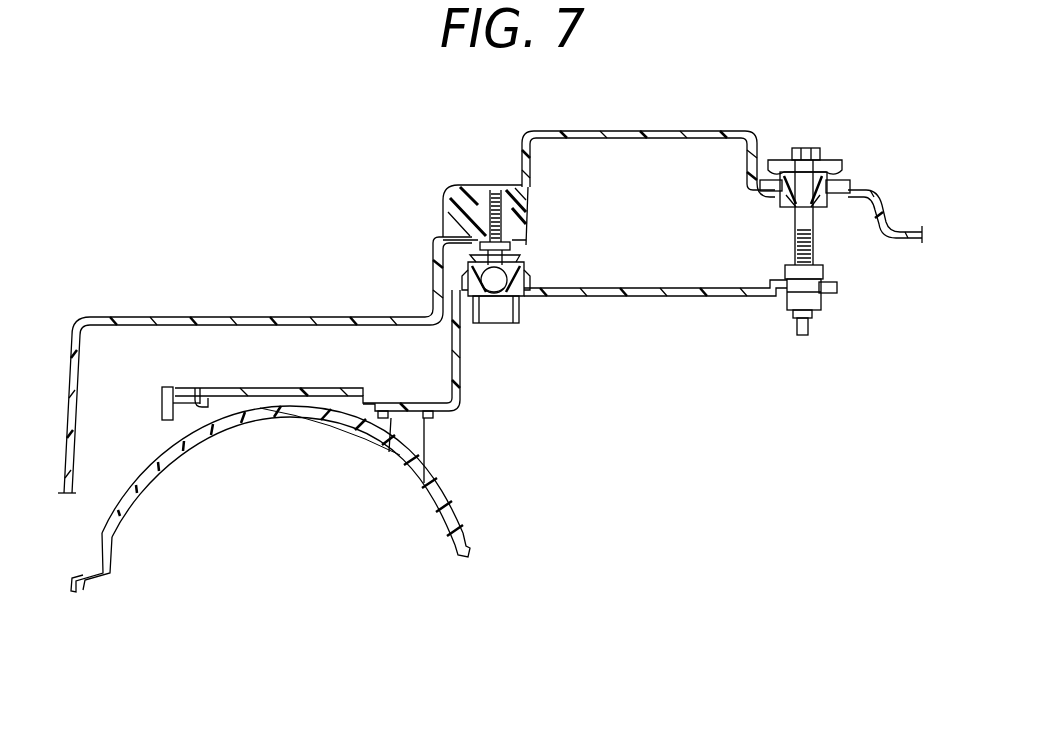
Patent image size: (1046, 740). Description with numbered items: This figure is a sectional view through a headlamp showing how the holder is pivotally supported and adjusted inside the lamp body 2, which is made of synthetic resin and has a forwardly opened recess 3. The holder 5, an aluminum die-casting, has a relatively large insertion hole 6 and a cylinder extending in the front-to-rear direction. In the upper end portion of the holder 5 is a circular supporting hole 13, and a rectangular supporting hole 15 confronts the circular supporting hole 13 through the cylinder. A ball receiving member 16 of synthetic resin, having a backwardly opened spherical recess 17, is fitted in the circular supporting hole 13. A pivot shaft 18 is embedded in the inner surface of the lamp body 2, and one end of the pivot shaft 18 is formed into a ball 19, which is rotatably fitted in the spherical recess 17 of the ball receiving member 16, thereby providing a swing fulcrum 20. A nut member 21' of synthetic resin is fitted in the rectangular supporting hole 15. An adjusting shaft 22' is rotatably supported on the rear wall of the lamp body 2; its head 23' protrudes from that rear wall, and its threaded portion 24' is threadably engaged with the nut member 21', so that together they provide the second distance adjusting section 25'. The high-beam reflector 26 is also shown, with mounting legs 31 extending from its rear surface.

The lamp body 2 is at (648, 131).
The recess 3 is at (274, 322).
The holder 5 is at (462, 398).
The insertion hole 6 is at (205, 393).
The circular supporting hole 13 is at (465, 278).
The rectangular supporting hole 15 is at (797, 288).
The ball receiving member 16 is at (520, 276).
The spherical recess 17 is at (488, 296).
The pivot shaft 18 is at (484, 240).
The ball 19 is at (515, 300).
The swing fulcrum 20 is at (520, 238).
The nut member 21' is at (845, 336).
The adjusting shaft 22' is at (852, 219).
The head 23' is at (811, 125).
The threaded portion 24' is at (797, 374).
The second distance adjusting section 25' is at (799, 257).
The high-beam reflector 26 is at (177, 463).
The mounting legs 31 is at (422, 455).